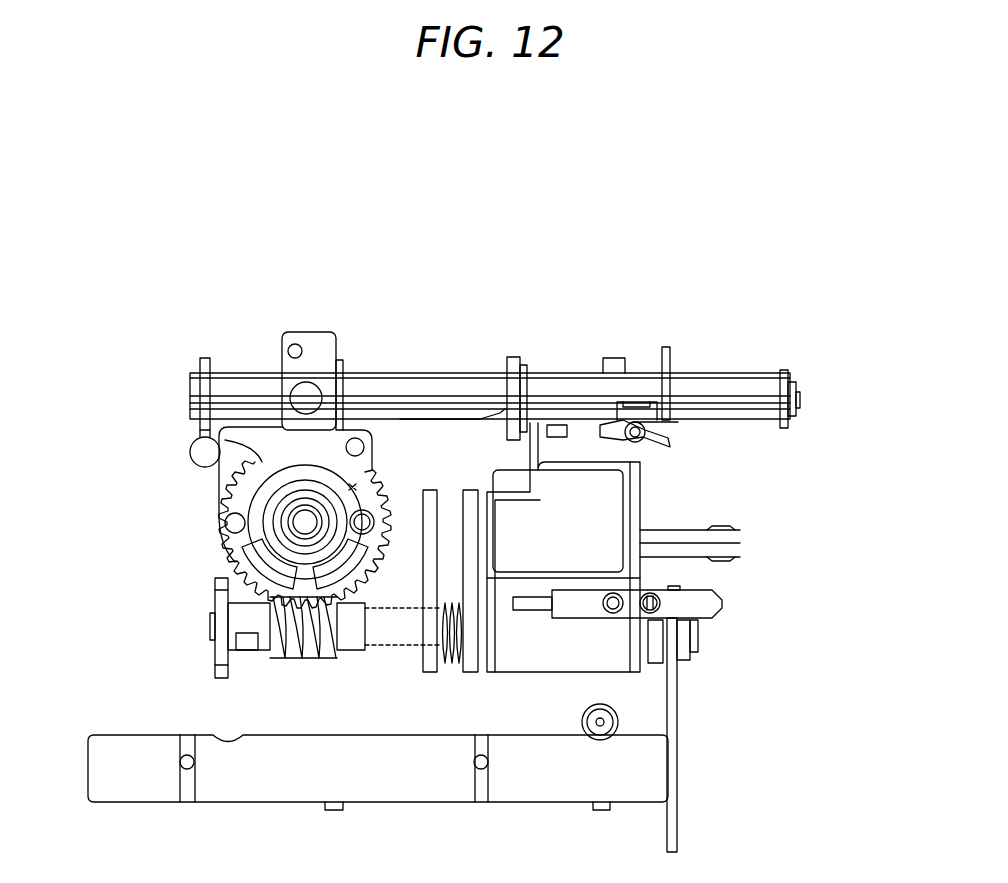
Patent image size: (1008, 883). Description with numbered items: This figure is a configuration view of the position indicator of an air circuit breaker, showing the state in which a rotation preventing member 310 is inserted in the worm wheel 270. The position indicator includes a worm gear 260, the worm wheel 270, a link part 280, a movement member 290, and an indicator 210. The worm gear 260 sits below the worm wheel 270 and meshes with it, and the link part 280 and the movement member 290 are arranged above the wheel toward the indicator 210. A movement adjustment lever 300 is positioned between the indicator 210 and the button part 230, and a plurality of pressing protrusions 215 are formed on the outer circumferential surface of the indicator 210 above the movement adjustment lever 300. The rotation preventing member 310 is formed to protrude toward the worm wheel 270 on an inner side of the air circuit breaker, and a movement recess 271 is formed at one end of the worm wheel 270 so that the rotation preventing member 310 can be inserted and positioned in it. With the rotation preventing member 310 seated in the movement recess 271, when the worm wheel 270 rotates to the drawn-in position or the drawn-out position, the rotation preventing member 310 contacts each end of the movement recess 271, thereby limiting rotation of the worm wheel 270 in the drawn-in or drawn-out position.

The indicator 210 is at (722, 375).
The pressing protrusions 215 is at (668, 430).
The button part 230 is at (630, 508).
The worm gear 260 is at (408, 633).
The worm wheel 270 is at (218, 552).
The movement recess 271 is at (353, 487).
The link part 280 is at (260, 477).
The movement member 290 is at (317, 342).
The movement adjustment lever 300 is at (668, 446).
The rotation preventing member 310 is at (390, 582).